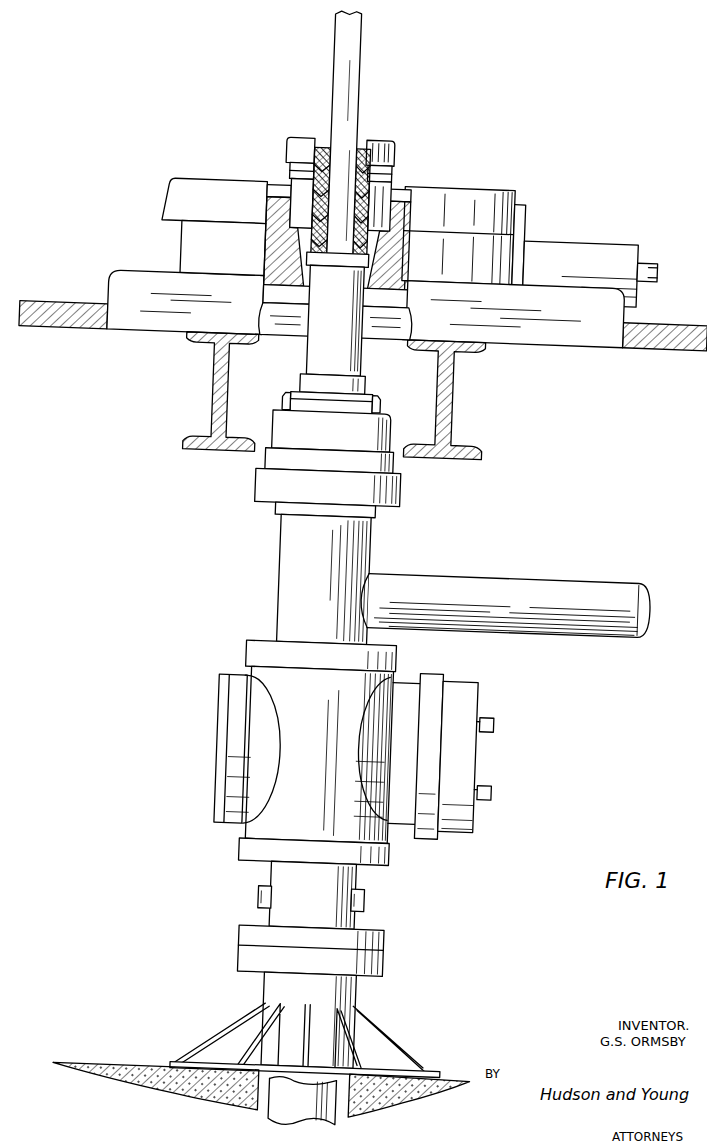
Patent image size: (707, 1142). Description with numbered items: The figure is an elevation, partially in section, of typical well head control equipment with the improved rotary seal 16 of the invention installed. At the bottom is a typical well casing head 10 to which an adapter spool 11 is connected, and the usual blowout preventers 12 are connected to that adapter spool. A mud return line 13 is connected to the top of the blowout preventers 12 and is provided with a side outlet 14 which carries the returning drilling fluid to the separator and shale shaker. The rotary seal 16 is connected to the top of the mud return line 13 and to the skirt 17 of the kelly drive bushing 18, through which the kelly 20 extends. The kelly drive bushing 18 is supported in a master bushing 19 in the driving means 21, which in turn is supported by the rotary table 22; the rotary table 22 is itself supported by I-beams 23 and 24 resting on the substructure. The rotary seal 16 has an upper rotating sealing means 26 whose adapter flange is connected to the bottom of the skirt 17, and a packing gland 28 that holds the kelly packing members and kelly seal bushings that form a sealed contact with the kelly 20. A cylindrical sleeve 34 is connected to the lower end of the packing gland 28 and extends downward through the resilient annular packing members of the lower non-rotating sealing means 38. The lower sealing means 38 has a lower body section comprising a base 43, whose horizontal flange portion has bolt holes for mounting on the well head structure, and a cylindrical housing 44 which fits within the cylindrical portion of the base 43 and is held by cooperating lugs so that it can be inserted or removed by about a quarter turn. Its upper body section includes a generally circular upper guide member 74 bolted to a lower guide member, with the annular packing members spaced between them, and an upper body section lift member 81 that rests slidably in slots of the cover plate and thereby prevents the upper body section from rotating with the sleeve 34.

The well casing head 10 is at (379, 991).
The adapter spool 11 is at (372, 884).
The blowout preventers 12 is at (261, 830).
The mud return line 13 is at (289, 567).
The side outlet 14 is at (517, 573).
The rotary seal 16 is at (331, 379).
The skirt 17 is at (267, 248).
The kelly drive bushing 18 is at (281, 152).
The master bushing 19 is at (393, 196).
The kelly 20 is at (341, 172).
The driving means 21 is at (505, 185).
The rotary table 22 is at (563, 326).
The I-beam 23 is at (453, 358).
The I-beam 24 is at (215, 424).
The upper rotating sealing means 26 is at (384, 296).
The packing gland 28 is at (287, 295).
The cylindrical sleeve 34 is at (366, 357).
The lower non-rotating sealing means 38 is at (274, 434).
The base 43 is at (397, 448).
The cylindrical housing 44 is at (394, 436).
The upper guide member 74 is at (367, 384).
The upper body section lift member 81 is at (383, 403).